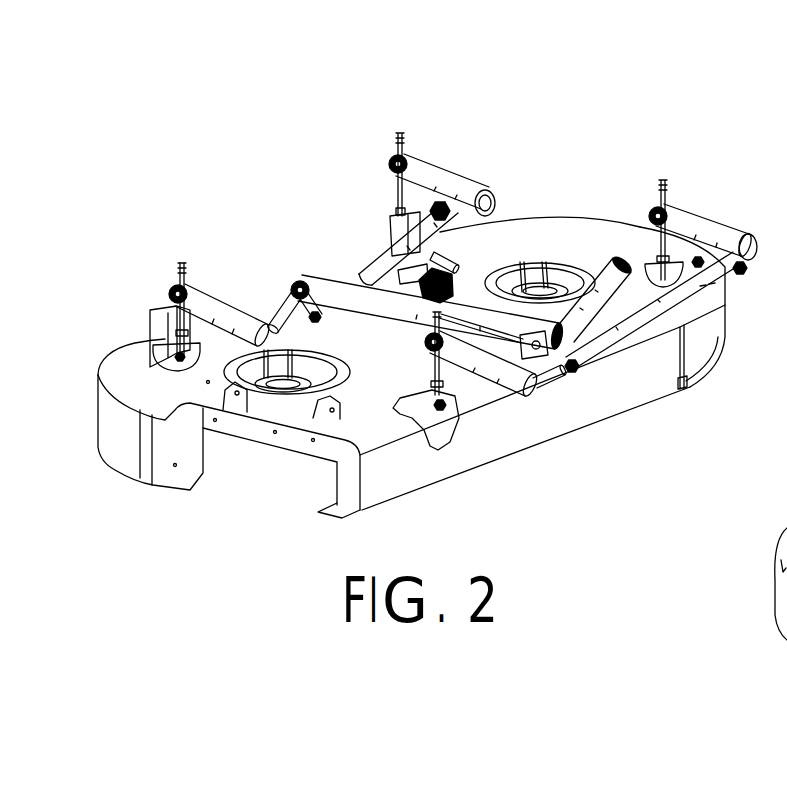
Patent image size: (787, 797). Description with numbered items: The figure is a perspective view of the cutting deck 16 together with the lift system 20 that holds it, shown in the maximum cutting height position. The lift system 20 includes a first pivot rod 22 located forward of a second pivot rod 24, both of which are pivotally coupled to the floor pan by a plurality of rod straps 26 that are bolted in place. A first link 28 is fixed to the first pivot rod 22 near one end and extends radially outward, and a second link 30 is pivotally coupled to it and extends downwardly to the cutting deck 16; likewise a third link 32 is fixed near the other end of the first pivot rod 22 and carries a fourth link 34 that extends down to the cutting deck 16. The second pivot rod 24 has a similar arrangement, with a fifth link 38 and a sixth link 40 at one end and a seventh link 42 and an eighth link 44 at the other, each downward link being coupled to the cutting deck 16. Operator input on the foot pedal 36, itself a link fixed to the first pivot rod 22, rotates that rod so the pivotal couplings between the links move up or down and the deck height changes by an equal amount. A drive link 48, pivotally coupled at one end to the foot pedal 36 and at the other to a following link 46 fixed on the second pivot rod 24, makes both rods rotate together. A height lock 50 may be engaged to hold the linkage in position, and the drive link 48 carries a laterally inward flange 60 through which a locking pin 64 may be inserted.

The cutting deck 16 is at (408, 475).
The lift system 20 is at (688, 97).
The first pivot rod 22 is at (725, 320).
The second pivot rod 24 is at (385, 258).
The rod straps 26 is at (433, 203).
The first link 28 is at (703, 226).
The second link 30 is at (660, 228).
The third link 32 is at (493, 392).
The fourth link 34 is at (432, 381).
The foot pedal 36 is at (585, 275).
The fifth link 38 is at (447, 190).
The sixth link 40 is at (398, 189).
The seventh link 42 is at (208, 290).
The eighth link 44 is at (147, 330).
The following link 46 is at (283, 298).
The drive link 48 is at (562, 380).
The height lock 50 is at (463, 262).
The flange 60 is at (545, 272).
The locking pin 64 is at (392, 220).